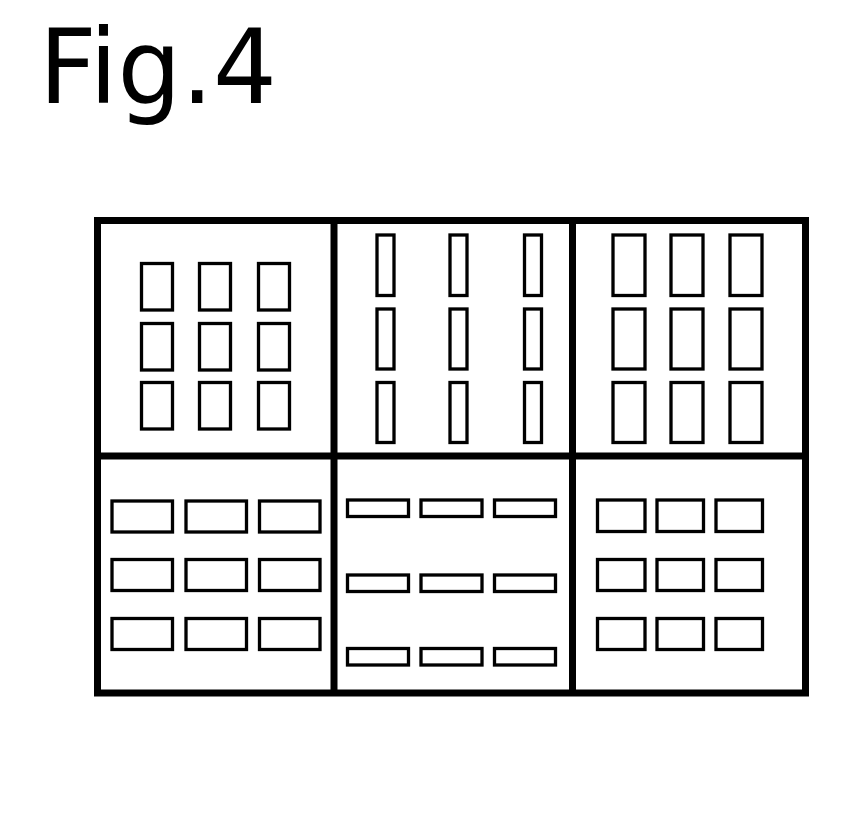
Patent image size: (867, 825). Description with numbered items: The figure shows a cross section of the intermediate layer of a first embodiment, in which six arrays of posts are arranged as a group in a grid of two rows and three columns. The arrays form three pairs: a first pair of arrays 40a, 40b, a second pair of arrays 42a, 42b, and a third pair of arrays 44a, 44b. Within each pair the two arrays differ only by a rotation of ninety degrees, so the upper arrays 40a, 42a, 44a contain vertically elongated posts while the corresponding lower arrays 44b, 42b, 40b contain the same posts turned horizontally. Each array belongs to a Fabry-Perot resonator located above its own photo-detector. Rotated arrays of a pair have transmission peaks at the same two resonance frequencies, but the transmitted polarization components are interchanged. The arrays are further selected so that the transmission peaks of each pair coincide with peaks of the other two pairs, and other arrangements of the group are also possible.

The array of posts 40a is at (305, 250).
The array of posts 42a is at (422, 250).
The array of posts 44a is at (598, 250).
The array of posts 44b is at (128, 662).
The array of posts 42b is at (348, 676).
The array of posts 40b is at (598, 663).